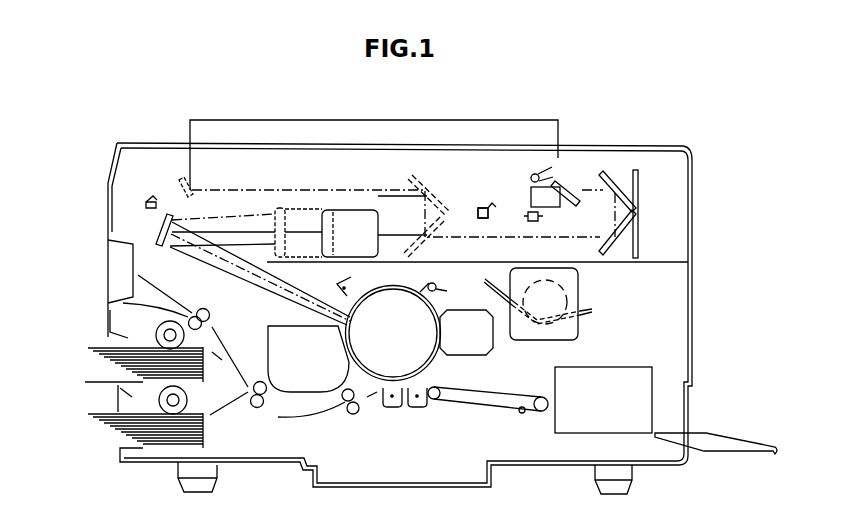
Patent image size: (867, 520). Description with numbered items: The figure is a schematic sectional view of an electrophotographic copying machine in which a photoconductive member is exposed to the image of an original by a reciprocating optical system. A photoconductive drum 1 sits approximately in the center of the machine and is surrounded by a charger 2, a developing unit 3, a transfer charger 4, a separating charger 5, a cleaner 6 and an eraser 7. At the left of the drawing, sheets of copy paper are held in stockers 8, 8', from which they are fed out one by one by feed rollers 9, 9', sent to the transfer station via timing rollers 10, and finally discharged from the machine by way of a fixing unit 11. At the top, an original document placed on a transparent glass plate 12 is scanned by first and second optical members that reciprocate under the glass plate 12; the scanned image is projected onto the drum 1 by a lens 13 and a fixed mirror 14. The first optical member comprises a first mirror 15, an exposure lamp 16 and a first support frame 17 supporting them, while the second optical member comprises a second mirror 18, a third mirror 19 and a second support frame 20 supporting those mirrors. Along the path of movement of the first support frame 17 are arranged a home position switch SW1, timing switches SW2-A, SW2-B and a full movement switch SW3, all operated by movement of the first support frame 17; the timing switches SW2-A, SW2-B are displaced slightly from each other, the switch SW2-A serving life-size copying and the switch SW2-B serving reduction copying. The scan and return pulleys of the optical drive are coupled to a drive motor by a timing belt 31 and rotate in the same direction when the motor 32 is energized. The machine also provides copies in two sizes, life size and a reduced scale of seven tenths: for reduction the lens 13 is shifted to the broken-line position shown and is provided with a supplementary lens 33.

The photoconductive drum 1 is at (401, 347).
The charger 2 is at (337, 284).
The developing unit 3 is at (315, 366).
The transfer charger 4 is at (391, 412).
The separating charger 5 is at (418, 412).
The cleaner 6 is at (472, 345).
The eraser 7 is at (441, 291).
The stocker 8 is at (135, 377).
The stocker 8' is at (144, 449).
The feed roller 9 is at (157, 329).
The feed roller 9' is at (201, 400).
The timing rollers 10 is at (354, 419).
The fixing unit 11 is at (607, 413).
The transparent glass plate 12 is at (424, 148).
The lens 13 is at (363, 233).
The fixed mirror 14 is at (157, 230).
The first mirror 15 is at (583, 180).
The exposure lamp 16 is at (538, 173).
The first support frame 17 is at (531, 194).
The second mirror 18 is at (620, 188).
The third mirror 19 is at (620, 240).
The second support frame 20 is at (640, 210).
The timing belt 31 is at (591, 312).
The motor 32 is at (578, 273).
The supplementary lens 33 is at (276, 215).
The home position switch SW1 is at (558, 223).
The timing switch SW2-A is at (490, 217).
The timing switch SW2-B is at (479, 218).
The full movement switch SW3 is at (147, 202).